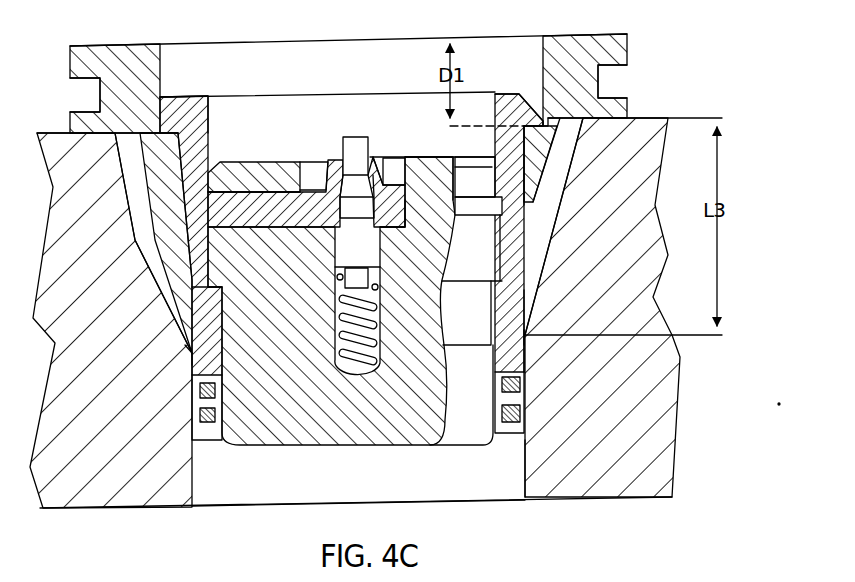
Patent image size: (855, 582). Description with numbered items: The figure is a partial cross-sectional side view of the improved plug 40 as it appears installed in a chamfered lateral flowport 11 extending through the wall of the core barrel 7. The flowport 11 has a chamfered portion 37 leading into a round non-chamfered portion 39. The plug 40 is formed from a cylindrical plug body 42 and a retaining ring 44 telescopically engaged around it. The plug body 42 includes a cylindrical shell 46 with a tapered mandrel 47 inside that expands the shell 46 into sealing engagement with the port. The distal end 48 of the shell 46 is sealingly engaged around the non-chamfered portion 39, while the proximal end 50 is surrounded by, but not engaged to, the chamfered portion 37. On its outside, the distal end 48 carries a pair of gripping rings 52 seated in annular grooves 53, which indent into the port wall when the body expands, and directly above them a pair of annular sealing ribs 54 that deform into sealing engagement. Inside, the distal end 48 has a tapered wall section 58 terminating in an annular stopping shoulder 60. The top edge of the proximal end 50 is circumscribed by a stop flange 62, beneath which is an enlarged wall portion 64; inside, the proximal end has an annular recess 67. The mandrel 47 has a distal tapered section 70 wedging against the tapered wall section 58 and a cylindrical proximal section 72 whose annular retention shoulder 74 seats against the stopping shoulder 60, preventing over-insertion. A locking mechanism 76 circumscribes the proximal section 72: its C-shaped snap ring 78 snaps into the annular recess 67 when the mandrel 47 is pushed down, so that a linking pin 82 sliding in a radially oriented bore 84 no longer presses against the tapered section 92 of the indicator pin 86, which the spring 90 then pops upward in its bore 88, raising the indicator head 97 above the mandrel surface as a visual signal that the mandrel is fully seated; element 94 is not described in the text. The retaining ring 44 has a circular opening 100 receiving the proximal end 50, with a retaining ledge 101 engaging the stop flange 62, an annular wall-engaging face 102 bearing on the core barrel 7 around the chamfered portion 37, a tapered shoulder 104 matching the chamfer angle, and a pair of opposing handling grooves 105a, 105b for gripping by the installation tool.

The core barrel 7 is at (114, 466).
The lateral flowport 11 is at (427, 484).
The chamfered portion 37 is at (563, 184).
The non-chamfered portion 39 is at (525, 465).
The plug 40 is at (86, 20).
The plug body 42 is at (188, 352).
The retaining ring 44 is at (113, 47).
The cylindrical shell 46 is at (510, 331).
The tapered mandrel 47 is at (273, 166).
The distal end 48 is at (524, 338).
The proximal end 50 is at (204, 130).
The gripping rings 52 is at (623, 307).
The annular grooves 53 is at (500, 410).
The annular sealing ribs 54 is at (198, 385).
The tapered wall section 58 is at (225, 327).
The annular stopping shoulder 60 is at (225, 283).
The stop flange 62 is at (538, 90).
The enlarged wall portion 64 is at (191, 268).
The annular recess 67 is at (153, 243).
The distal tapered section 70 is at (483, 358).
The cylindrical proximal section 72 is at (488, 258).
The annular retention shoulder 74 is at (482, 288).
The locking mechanism 76 is at (403, 150).
The C-shaped snap ring 78 is at (456, 204).
The linking pin 82 is at (289, 226).
The radially oriented bore 84 is at (256, 180).
The indicator pin 86 is at (371, 236).
The bore 88 is at (343, 158).
The spring 90 is at (329, 372).
The tapered section 92 is at (364, 189).
The piston body 94 is at (376, 226).
The indicator head 97 is at (357, 147).
The circular opening 100 is at (161, 78).
The retaining ledge 101 is at (543, 127).
The wall-engaging face 102 is at (625, 128).
The tapered shoulder 104 is at (157, 167).
The handling groove 105a is at (99, 95).
The handling groove 105b is at (600, 86).